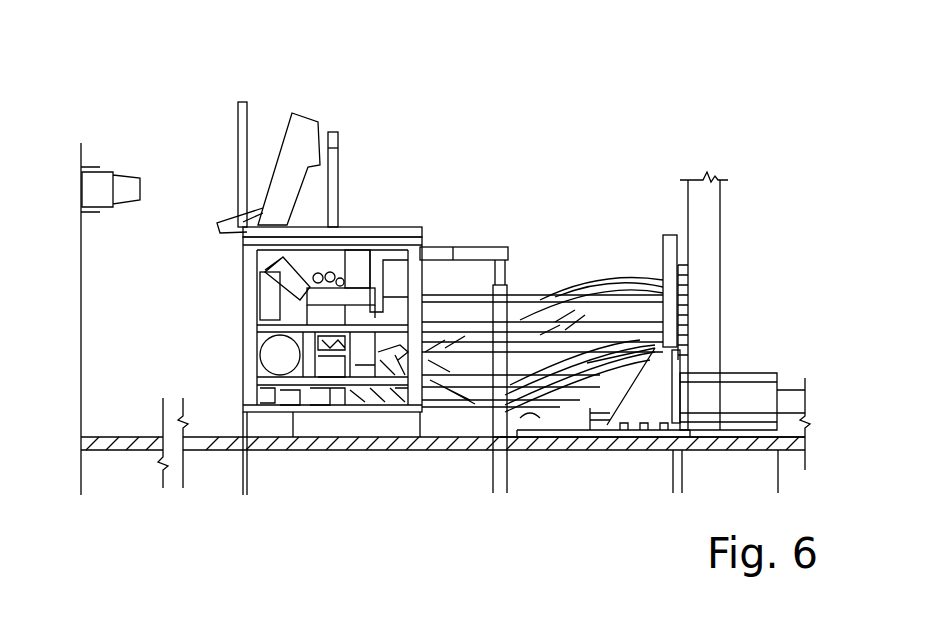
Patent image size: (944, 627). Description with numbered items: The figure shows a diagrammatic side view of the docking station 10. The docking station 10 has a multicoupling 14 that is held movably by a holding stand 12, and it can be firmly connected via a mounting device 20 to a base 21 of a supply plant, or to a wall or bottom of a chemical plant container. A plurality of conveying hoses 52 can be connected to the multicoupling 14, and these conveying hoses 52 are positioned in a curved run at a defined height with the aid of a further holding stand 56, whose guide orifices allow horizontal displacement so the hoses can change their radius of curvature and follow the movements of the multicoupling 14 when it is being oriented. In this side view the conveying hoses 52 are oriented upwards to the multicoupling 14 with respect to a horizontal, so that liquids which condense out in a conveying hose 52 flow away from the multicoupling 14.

The docking station 10 is at (372, 135).
The holding stand 12 is at (643, 413).
The multicoupling 14 is at (668, 243).
The mounting device 20 is at (580, 438).
The base 21 is at (357, 458).
The conveying hoses 52 is at (535, 295).
The holding stand 56 is at (477, 248).